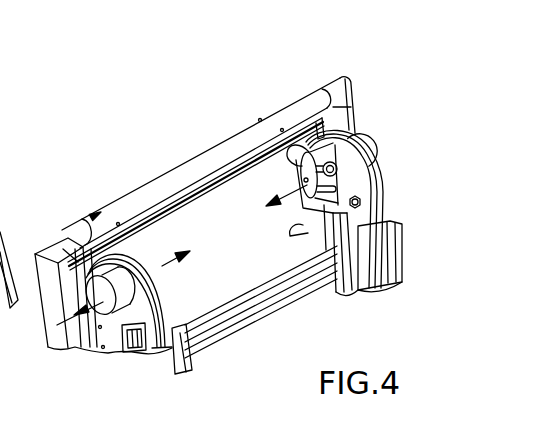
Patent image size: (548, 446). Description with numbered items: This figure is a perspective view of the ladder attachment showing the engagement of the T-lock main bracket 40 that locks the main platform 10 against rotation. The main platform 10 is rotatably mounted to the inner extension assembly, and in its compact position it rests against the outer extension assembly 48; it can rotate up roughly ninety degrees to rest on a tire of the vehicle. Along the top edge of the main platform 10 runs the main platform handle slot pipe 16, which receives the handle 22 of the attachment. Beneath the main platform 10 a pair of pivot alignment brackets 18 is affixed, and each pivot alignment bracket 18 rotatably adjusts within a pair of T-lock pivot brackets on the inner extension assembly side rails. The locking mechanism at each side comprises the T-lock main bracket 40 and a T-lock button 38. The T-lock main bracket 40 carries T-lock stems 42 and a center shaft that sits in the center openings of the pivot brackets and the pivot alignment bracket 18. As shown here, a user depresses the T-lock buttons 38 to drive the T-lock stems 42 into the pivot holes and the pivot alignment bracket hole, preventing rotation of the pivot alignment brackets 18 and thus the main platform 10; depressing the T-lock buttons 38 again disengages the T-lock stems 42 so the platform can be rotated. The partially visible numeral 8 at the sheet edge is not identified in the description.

The partially visible numeral (cut off at sheet edge) 8 is at (4, 92).
The main platform 10 is at (193, 207).
The main platform handle slot pipe 16 is at (230, 153).
The pivot alignment bracket 18 is at (120, 250).
The handle 22 is at (312, 100).
The T-lock button 38 is at (122, 335).
The T-lock main bracket 40 is at (148, 283).
The T-lock stem 42 is at (128, 236).
The outer extension assembly 48 is at (196, 373).